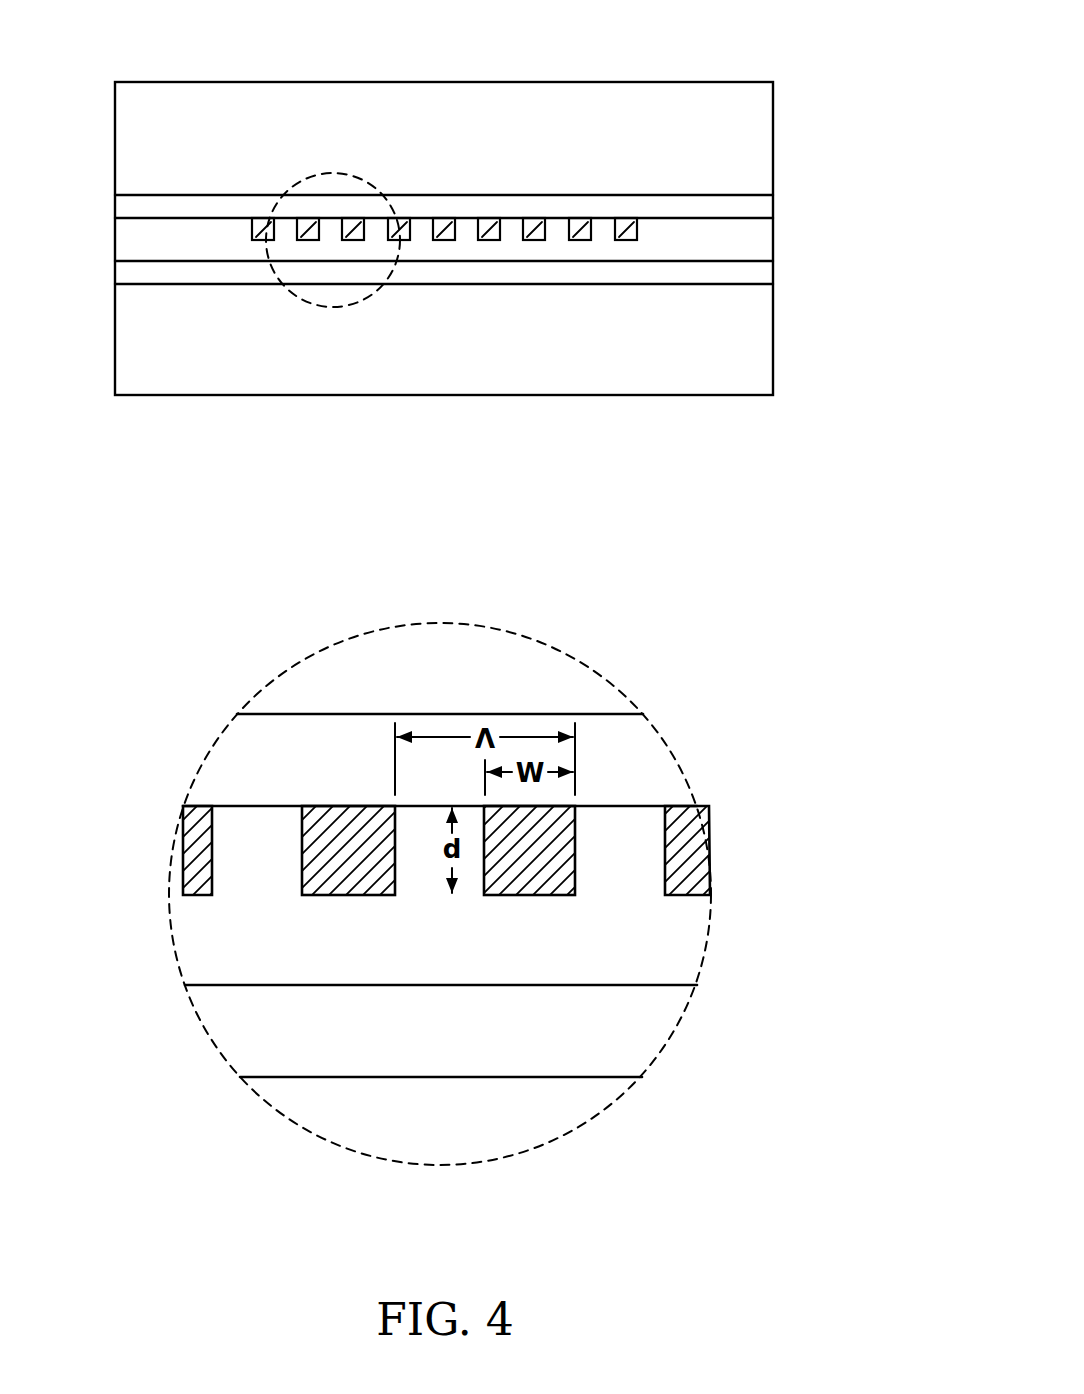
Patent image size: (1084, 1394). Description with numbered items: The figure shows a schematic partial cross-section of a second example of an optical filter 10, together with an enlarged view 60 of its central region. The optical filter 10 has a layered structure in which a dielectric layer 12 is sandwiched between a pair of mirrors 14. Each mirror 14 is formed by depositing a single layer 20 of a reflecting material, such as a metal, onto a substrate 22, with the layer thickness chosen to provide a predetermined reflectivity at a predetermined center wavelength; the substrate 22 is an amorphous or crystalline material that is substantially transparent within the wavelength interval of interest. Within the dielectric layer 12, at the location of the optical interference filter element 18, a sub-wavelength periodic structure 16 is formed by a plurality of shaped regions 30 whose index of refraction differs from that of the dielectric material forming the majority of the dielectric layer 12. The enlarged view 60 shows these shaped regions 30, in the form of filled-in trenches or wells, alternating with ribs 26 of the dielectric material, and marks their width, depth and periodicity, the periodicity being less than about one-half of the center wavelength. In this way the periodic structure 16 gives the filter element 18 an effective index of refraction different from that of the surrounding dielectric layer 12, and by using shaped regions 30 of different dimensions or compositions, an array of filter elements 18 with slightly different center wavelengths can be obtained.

The optical filter 10 is at (750, 418).
The dielectric layer 12 is at (760, 240).
The mirror 14 is at (867, 78).
The sub-wavelength periodic structure 16 is at (723, 806).
The optical interference filter element 18 is at (250, 61).
The layer of reflecting material 20 is at (760, 205).
The substrate 22 is at (627, 153).
The rib 26 is at (258, 830).
The shaped region 30 is at (350, 830).
The enlarged view 60 is at (292, 185).